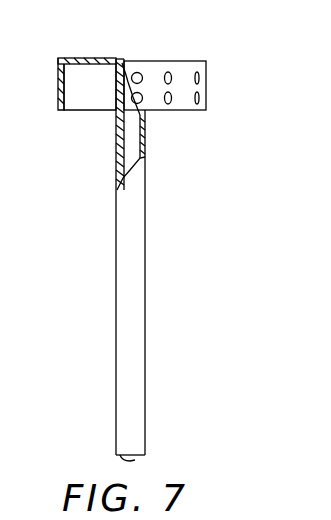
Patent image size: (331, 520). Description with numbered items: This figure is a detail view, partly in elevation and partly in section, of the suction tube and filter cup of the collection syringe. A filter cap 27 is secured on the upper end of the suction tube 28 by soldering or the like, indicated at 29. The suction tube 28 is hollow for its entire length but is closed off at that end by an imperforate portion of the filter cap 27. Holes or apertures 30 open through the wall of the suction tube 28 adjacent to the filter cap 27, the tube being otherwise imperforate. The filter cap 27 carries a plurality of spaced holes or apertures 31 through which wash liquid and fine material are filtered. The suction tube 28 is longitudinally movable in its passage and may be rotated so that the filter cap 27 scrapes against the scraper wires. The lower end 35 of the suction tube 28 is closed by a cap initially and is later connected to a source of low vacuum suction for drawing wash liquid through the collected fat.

The filter cap 27 is at (127, 63).
The suction tube 28 is at (143, 272).
The soldering 29 is at (116, 70).
The holes or apertures 30 is at (115, 80).
The spaced holes or apertures 31 is at (58, 80).
The lower end 35 is at (130, 461).